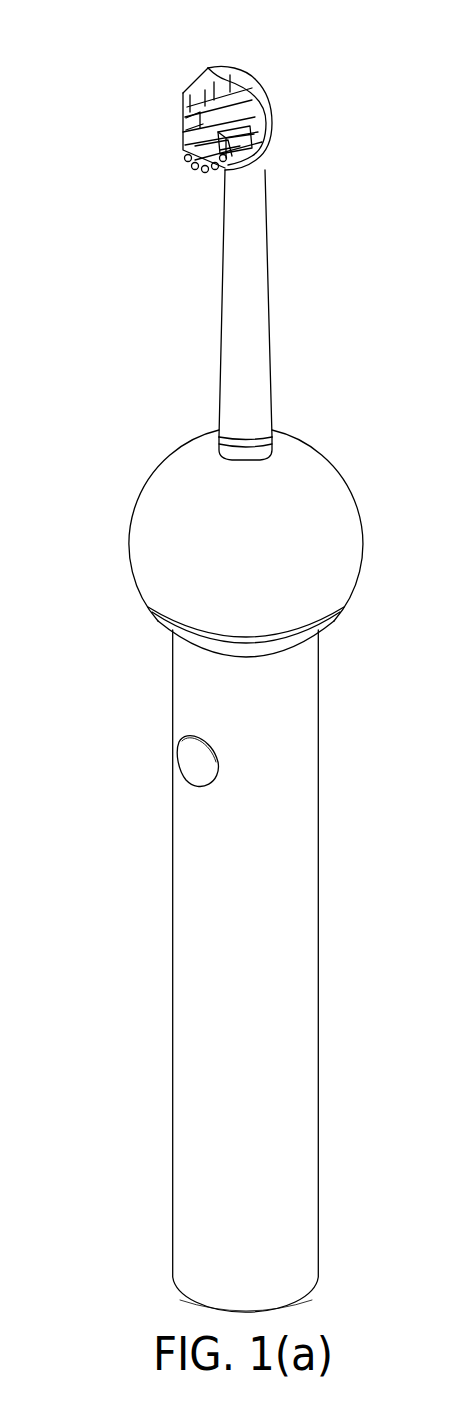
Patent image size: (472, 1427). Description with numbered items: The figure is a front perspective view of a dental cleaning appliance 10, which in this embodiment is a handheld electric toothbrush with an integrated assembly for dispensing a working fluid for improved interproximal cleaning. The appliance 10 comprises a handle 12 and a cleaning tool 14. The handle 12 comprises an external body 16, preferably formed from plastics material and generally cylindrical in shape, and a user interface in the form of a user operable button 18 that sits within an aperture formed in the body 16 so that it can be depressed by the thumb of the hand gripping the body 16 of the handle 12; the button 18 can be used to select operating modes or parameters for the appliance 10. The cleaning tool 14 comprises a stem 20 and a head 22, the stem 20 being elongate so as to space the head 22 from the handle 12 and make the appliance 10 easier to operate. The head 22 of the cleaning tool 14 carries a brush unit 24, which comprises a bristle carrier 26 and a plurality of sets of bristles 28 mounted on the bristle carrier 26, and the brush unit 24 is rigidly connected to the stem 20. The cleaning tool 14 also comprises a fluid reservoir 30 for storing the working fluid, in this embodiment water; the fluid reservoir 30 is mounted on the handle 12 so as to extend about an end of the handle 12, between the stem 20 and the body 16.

The dental cleaning appliance 10 is at (104, 434).
The handle 12 is at (332, 909).
The cleaning tool 14 is at (205, 322).
The external body 16 is at (307, 1053).
The user operable button 18 is at (188, 760).
The stem 20 is at (257, 283).
The head 22 is at (285, 92).
The brush unit 24 is at (160, 80).
The bristle carrier 26 is at (228, 72).
The bristles 28 is at (262, 132).
The fluid reservoir 30 is at (142, 555).